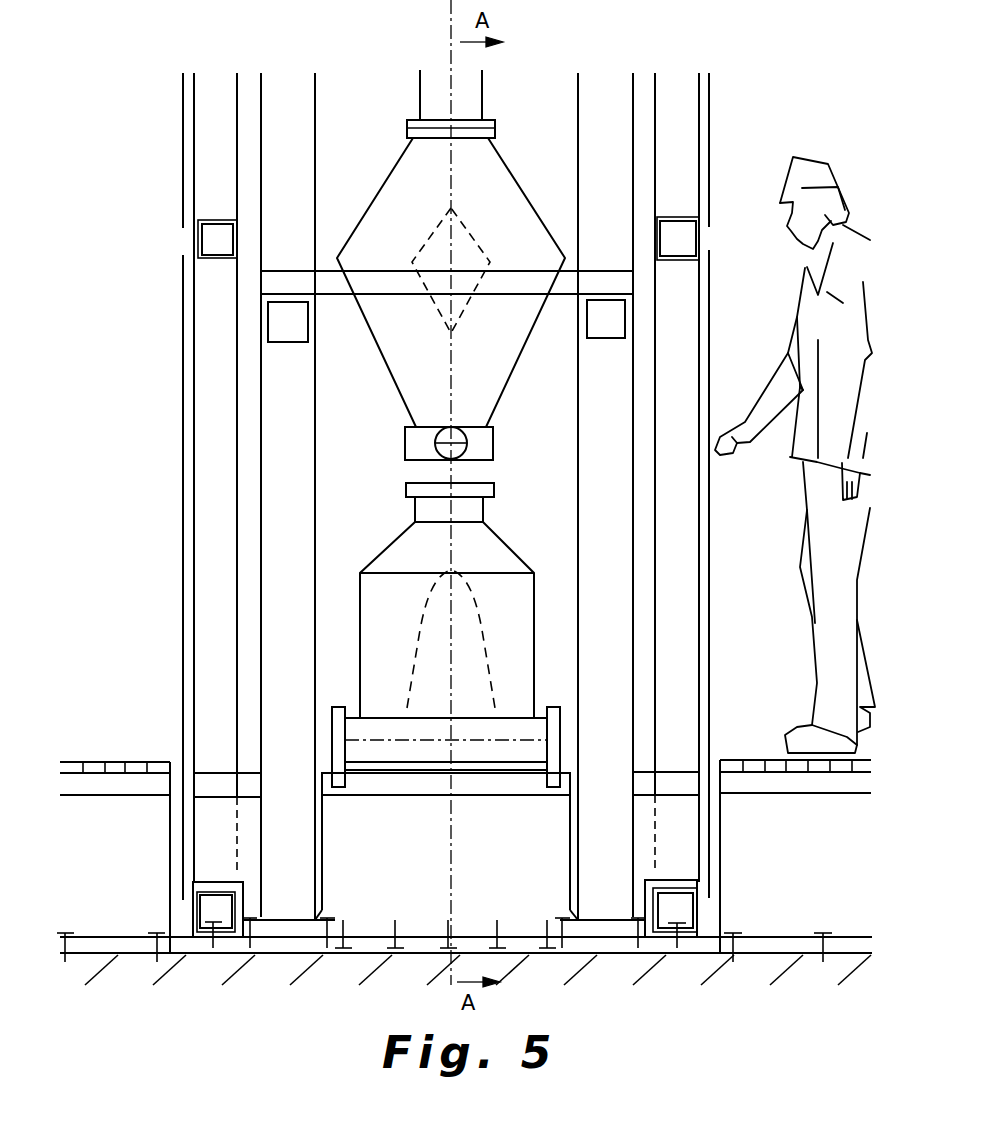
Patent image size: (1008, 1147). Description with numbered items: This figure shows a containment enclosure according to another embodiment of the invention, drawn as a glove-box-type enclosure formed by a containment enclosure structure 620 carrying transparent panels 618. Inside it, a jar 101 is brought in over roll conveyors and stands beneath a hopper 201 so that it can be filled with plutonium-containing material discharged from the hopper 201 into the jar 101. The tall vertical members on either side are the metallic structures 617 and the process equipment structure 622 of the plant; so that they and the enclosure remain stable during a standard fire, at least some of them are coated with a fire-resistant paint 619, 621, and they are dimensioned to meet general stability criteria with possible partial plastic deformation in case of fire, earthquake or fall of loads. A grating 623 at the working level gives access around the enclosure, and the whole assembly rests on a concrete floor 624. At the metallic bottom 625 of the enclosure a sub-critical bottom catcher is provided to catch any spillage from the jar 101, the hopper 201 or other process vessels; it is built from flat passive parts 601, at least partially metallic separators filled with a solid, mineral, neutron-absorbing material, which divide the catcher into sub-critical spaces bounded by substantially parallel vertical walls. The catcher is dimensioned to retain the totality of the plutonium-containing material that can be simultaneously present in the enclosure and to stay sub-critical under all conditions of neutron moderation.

The jar 101 is at (511, 535).
The hopper 201 is at (512, 172).
The passive parts 601 is at (495, 843).
The metallic structures 617 is at (290, 392).
The transparent panels 618 is at (182, 392).
The fire-resistant paint 619 is at (192, 448).
The containment enclosure structure 620 is at (212, 503).
The fire-resistant paint 621 is at (260, 555).
The process equipment structure 622 is at (277, 613).
The grating 623 is at (138, 767).
The concrete floor 624 is at (352, 972).
The metallic bottom 625 is at (530, 945).